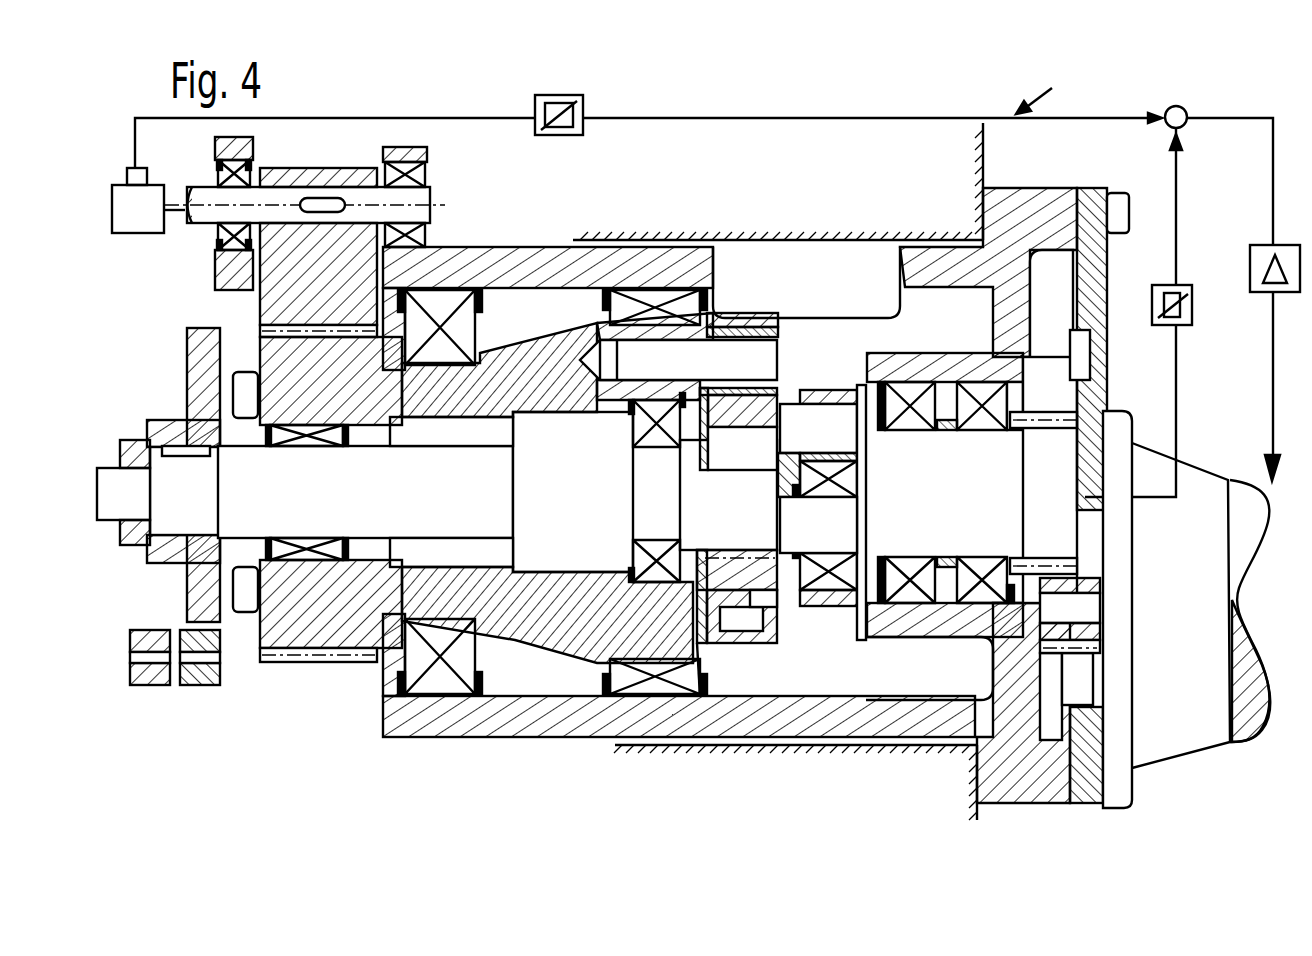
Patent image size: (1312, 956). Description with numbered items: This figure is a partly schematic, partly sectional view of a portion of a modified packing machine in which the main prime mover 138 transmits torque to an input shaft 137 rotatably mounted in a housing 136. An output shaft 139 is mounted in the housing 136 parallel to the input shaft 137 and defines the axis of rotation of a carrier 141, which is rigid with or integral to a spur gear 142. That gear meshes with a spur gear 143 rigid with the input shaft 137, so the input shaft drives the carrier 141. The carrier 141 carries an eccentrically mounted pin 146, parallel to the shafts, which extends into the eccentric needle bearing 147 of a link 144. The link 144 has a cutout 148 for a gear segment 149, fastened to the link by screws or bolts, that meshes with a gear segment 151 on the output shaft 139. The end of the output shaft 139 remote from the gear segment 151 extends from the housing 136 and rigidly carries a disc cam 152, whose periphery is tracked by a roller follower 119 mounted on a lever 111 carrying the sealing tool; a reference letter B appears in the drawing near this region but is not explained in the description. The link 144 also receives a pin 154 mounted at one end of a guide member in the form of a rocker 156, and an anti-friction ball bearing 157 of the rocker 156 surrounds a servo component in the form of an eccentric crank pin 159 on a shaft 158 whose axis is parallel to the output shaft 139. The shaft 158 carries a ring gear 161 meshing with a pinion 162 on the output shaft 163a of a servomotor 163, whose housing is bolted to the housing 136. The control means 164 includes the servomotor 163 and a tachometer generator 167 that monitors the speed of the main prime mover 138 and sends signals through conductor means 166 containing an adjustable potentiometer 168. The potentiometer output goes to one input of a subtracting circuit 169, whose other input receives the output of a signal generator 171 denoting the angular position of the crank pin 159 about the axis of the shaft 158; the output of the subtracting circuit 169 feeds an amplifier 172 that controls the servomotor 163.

The lever 111 is at (156, 685).
The roller follower 119 is at (212, 685).
The housing 136 is at (478, 262).
The input shaft 137 is at (203, 215).
The main prime mover 138 is at (143, 226).
The output shaft 139 is at (250, 500).
The carrier 141 is at (510, 640).
The spur gear 142 is at (288, 640).
The spur gear 143 is at (278, 297).
The link 144 is at (758, 300).
The eccentrically mounted pin 146 is at (653, 350).
The eccentric needle bearing 147 is at (781, 388).
The cutout 148 is at (733, 440).
The gear segment 149 is at (766, 625).
The gear segment 151 is at (677, 700).
The disc cam 152 is at (187, 400).
The pin 154 is at (868, 443).
The rocker 156 is at (870, 548).
The anti-friction ball bearing 157 is at (812, 548).
The shaft 158 is at (957, 540).
The eccentric crank pin 159 is at (800, 640).
The ring gear 161 is at (1080, 410).
The pinion 162 is at (1052, 580).
The servomotor 163 is at (1188, 730).
The output shaft of servomotor 163a is at (1100, 605).
The control means 164 is at (1051, 90).
The conductor means 166 is at (889, 118).
The tachometer generator 167 is at (150, 170).
The adjustable potentiometer 168 is at (558, 136).
The subtracting circuit 169 is at (1174, 106).
The signal generator 171 is at (1190, 290).
The amplifier 172 is at (1253, 262).
The section B is at (190, 328).